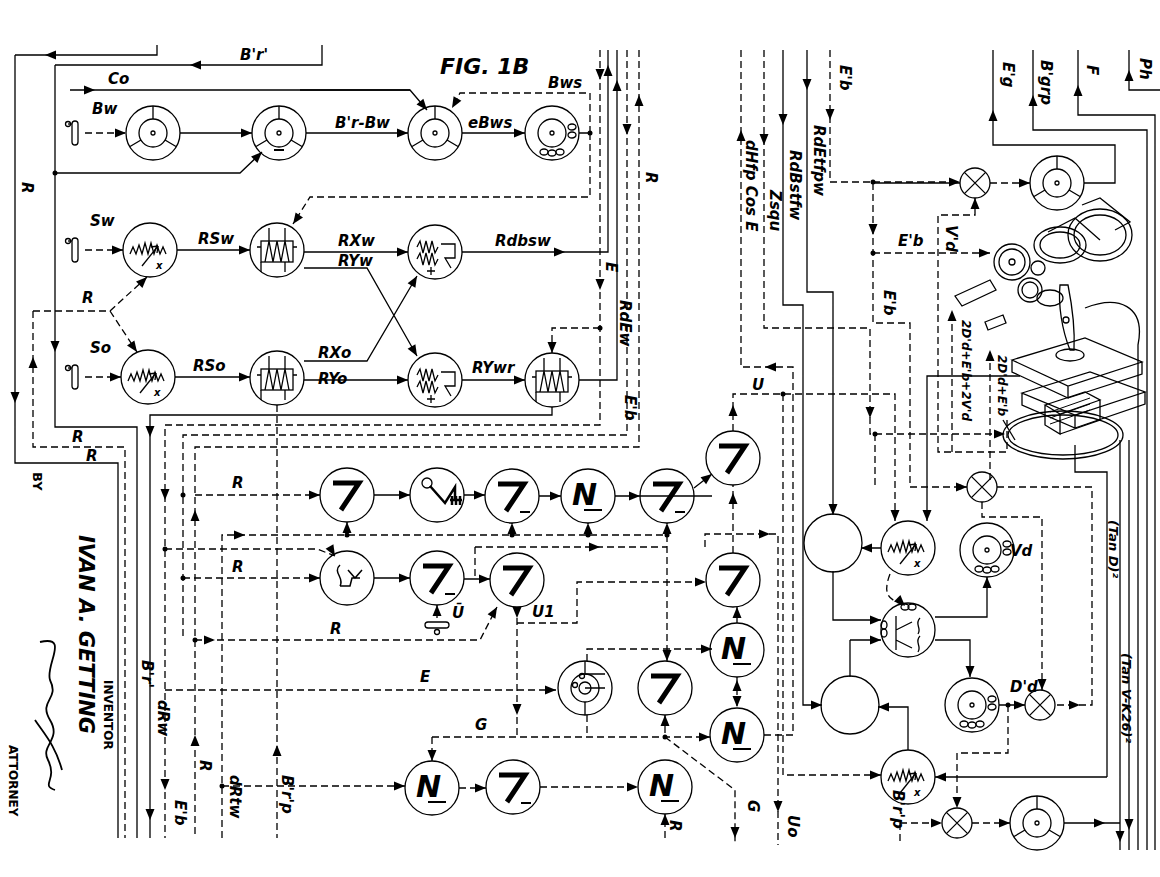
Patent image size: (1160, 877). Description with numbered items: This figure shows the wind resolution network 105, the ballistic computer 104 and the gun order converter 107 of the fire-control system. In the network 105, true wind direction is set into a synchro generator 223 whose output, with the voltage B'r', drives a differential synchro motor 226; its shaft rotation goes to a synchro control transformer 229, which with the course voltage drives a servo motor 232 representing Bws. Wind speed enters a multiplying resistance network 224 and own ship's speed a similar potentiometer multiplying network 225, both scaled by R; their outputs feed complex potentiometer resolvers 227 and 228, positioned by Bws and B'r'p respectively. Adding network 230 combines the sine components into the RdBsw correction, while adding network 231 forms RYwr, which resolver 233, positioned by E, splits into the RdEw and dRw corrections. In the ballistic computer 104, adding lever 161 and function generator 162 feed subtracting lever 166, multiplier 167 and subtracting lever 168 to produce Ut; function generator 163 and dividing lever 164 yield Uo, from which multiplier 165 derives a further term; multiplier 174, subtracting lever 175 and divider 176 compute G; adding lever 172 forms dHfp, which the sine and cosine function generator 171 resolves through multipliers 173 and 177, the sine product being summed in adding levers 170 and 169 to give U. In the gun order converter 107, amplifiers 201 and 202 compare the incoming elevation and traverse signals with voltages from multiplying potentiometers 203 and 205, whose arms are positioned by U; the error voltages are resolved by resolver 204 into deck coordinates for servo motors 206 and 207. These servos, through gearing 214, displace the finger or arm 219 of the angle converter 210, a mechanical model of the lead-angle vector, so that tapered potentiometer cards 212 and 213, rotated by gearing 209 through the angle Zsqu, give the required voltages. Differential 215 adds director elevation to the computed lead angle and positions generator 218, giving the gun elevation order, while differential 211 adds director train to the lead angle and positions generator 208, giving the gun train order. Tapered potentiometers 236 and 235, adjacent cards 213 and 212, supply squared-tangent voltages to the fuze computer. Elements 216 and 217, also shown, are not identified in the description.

The ballistic computer 104 is at (670, 438).
The wind resolution network 105 is at (340, 88).
The gun order converter 107 is at (968, 166).
The adding lever 161 is at (340, 468).
The function generator 162 is at (432, 468).
The function generator 163 is at (330, 600).
The dividing lever 164 is at (420, 598).
The multiplier 165 is at (545, 570).
The subtracting lever 166 is at (514, 469).
The multiplier 167 is at (590, 469).
The subtracting lever 168 is at (666, 469).
The adding lever 169 is at (728, 431).
The adding lever 170 is at (706, 578).
The sine and cosine function generator 171 is at (568, 668).
The adding lever 172 is at (662, 661).
The multiplier 173 is at (718, 628).
The multiplier 174 is at (410, 768).
The subtracting lever 175 is at (492, 767).
The divider 176 is at (650, 767).
The multiplier 177 is at (725, 713).
The amplifier 201 is at (848, 518).
The amplifier 202 is at (872, 690).
The multiplying potentiometer 203 is at (930, 558).
The resolver 204 is at (924, 612).
The multiplying potentiometer 205 is at (895, 758).
The servo motor 206 is at (1000, 573).
The servo motor 207 is at (985, 683).
The generator 208 is at (1057, 808).
The gearing 209 is at (1030, 465).
The angle converter 210 is at (1125, 208).
The differential 211 is at (965, 812).
The tapered potentiometer card 212 is at (1120, 370).
The tapered potentiometer card 213 is at (1070, 430).
The gearing 214 is at (1060, 230).
The differential 215 is at (964, 192).
The mixer 216 is at (993, 497).
The mixer 217 is at (1050, 714).
The generator 218 is at (1035, 166).
The finger or arm 219 is at (1075, 330).
The synchro generator 223 is at (172, 112).
The multiplying resistance network 224 is at (157, 224).
The potentiometer multiplying network 225 is at (160, 352).
The differential synchro motor 226 is at (298, 112).
The complex wound potentiometer resolver 227 is at (277, 224).
The complex potentiometer resolver 228 is at (270, 352).
The synchro control transformer 229 is at (455, 112).
The adding network 230 is at (455, 228).
The adding network 231 is at (445, 353).
The servo motor 232 is at (540, 152).
The complex potentiometer resolver 233 is at (540, 355).
The tapered potentiometer 235 is at (1138, 335).
The tapered potentiometer 236 is at (1105, 450).